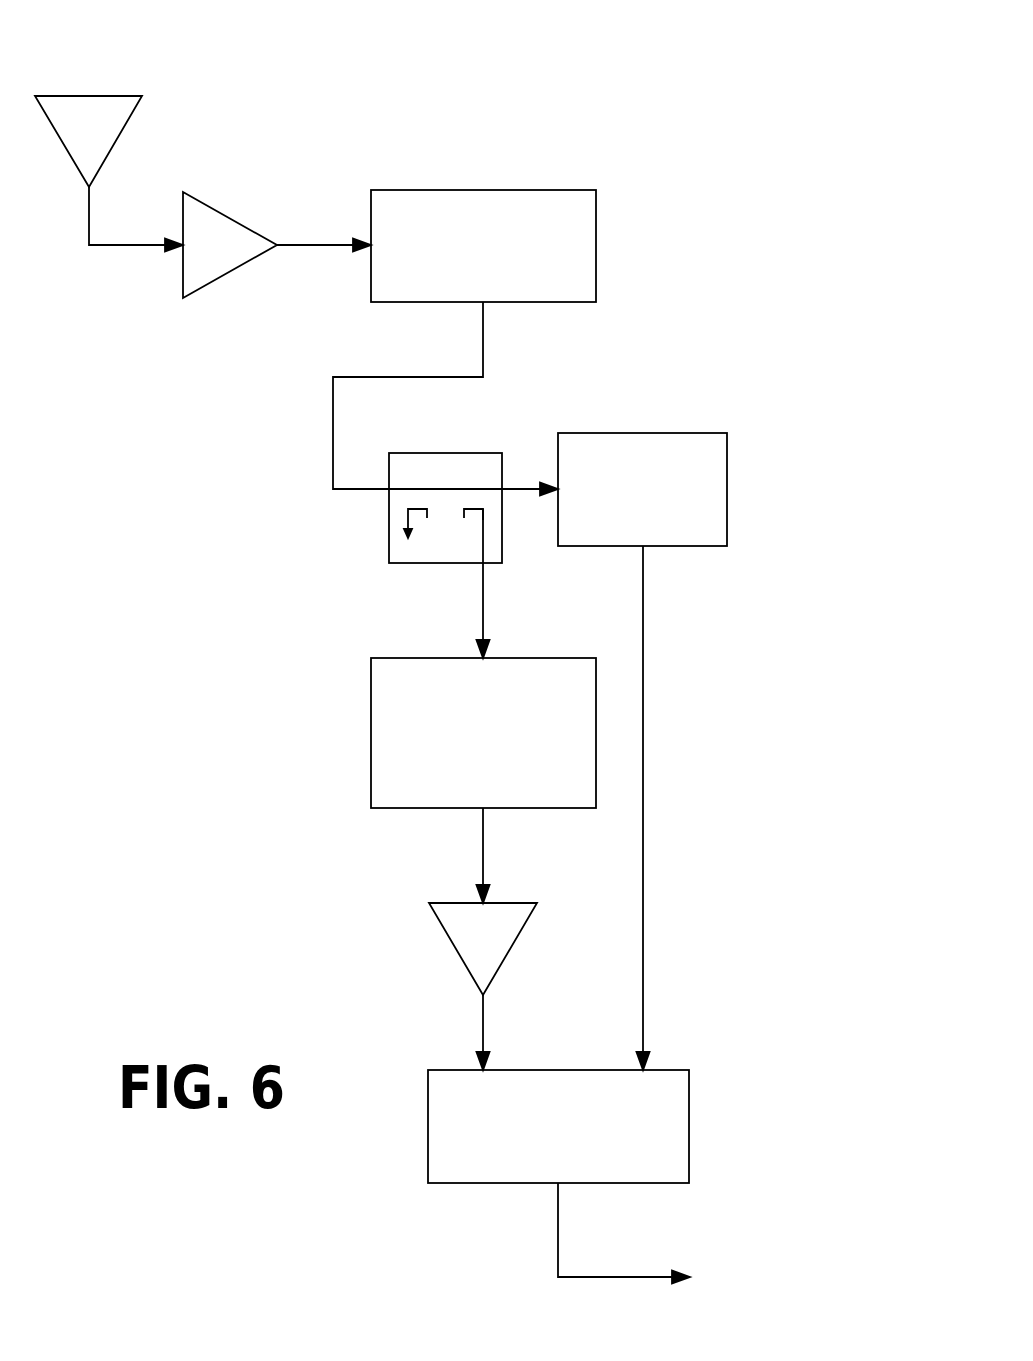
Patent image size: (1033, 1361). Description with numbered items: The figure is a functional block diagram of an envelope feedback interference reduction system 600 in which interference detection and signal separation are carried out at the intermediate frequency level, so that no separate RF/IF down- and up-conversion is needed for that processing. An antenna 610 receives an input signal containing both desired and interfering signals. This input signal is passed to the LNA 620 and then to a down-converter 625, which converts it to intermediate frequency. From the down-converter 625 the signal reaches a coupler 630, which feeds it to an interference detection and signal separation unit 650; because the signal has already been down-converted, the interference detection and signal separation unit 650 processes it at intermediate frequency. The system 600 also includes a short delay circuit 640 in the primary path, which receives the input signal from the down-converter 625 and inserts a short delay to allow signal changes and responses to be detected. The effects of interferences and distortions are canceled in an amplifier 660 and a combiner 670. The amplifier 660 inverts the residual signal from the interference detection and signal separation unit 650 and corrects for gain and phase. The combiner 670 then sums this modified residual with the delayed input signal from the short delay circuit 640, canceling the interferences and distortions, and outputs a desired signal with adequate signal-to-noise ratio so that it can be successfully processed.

The envelope feedback interference reduction system 600 is at (441, 659).
The antenna 610 is at (150, 111).
The LNA 620 is at (240, 342).
The down-converter 625 is at (544, 224).
The coupler 630 is at (428, 604).
The short delay circuit 640 is at (703, 458).
The interference detection and signal separation unit 650 is at (421, 733).
The amplifier 660 is at (428, 979).
The combiner 670 is at (620, 1097).